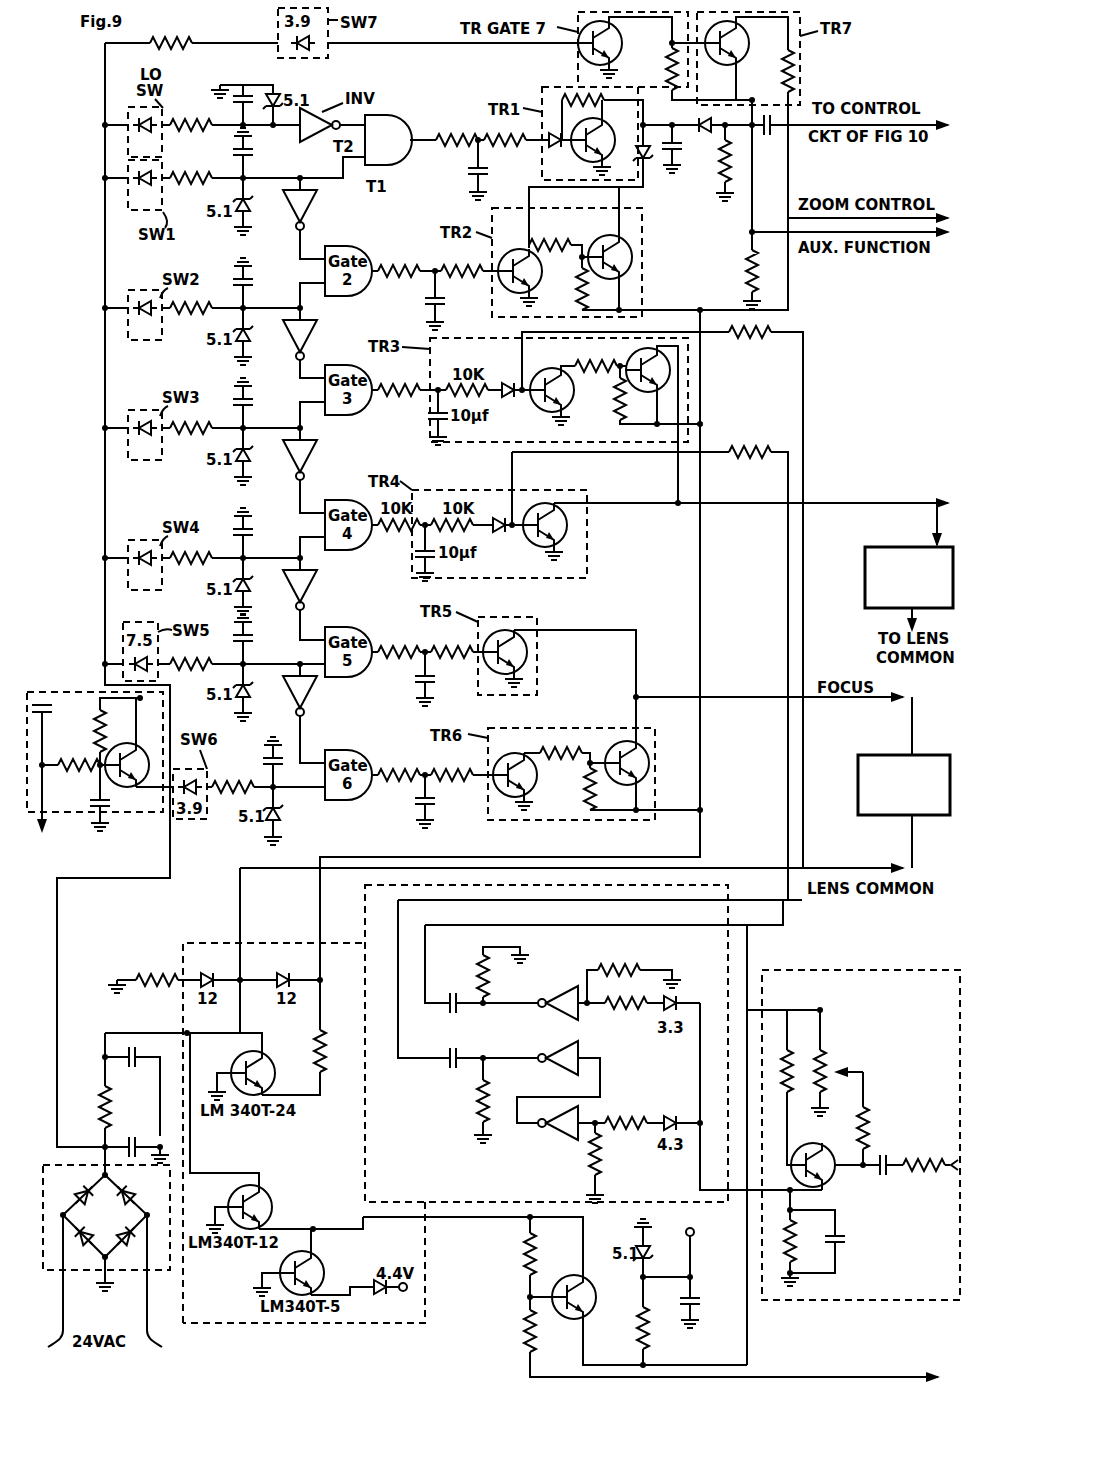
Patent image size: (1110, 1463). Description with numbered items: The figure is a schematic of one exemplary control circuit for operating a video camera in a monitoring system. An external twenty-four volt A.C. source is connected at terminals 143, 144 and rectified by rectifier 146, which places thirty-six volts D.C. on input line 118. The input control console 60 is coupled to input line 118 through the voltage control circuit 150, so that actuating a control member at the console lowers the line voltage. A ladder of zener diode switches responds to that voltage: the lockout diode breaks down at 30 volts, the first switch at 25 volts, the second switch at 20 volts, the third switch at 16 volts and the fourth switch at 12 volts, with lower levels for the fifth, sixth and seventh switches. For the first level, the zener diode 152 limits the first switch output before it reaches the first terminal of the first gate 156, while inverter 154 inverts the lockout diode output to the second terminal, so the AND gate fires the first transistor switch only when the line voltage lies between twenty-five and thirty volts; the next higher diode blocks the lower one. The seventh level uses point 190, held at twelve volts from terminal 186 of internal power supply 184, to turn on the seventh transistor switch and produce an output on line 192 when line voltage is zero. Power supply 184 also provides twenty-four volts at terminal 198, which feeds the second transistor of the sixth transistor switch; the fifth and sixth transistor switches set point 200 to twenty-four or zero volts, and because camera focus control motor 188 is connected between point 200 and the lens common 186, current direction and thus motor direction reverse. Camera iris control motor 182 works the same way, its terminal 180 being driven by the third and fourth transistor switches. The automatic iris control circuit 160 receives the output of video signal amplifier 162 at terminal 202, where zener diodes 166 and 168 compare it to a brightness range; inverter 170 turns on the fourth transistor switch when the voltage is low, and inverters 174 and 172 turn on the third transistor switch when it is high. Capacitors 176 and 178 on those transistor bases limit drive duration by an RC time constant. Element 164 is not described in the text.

The input line 118 is at (105, 78).
The breakdown voltage of lockout zener diode LOSW 30 is at (136, 132).
The breakdown voltage of zener diode SW-1 25 is at (136, 185).
The breakdown voltage of zener diode SW-2 20 is at (136, 315).
The breakdown voltage of zener diode SW-3 16 is at (136, 435).
The breakdown voltage of zener diode SW-4 12 is at (136, 565).
The 5.1 volt zener diode 152 is at (249, 216).
The inverter 154 is at (249, 147).
The Gate 1 156 is at (392, 166).
The voltage control circuit 150 is at (92, 692).
The input control console 60 is at (73, 824).
The capacitor 176 is at (432, 414).
The capacitor 178 is at (414, 560).
The terminal of camera iris control motor 180 is at (933, 517).
The camera iris control motor 182 is at (865, 580).
The camera focus control motor 188 is at (858, 785).
The point within Gate TR-7 190 is at (665, 56).
The output line of TR-7 192 is at (748, 115).
The point 200 is at (636, 697).
The automatic iris control circuit 160 is at (365, 922).
The video signal amplifier 162 is at (885, 968).
The output line 164 is at (700, 1180).
The zener diode 166 is at (680, 995).
The zener diode 168 is at (664, 1113).
The inverter 170 is at (575, 975).
The inverter 172 is at (550, 1046).
The inverter 174 is at (580, 1116).
The terminal 202 is at (700, 1118).
The internal power supply 184 is at (200, 943).
The terminal of power supply 186 is at (241, 950).
The terminal of power supply 198 is at (312, 1036).
The rectifier 146 is at (43, 1270).
The terminal 143 is at (42, 1293).
The terminal 144 is at (172, 1289).